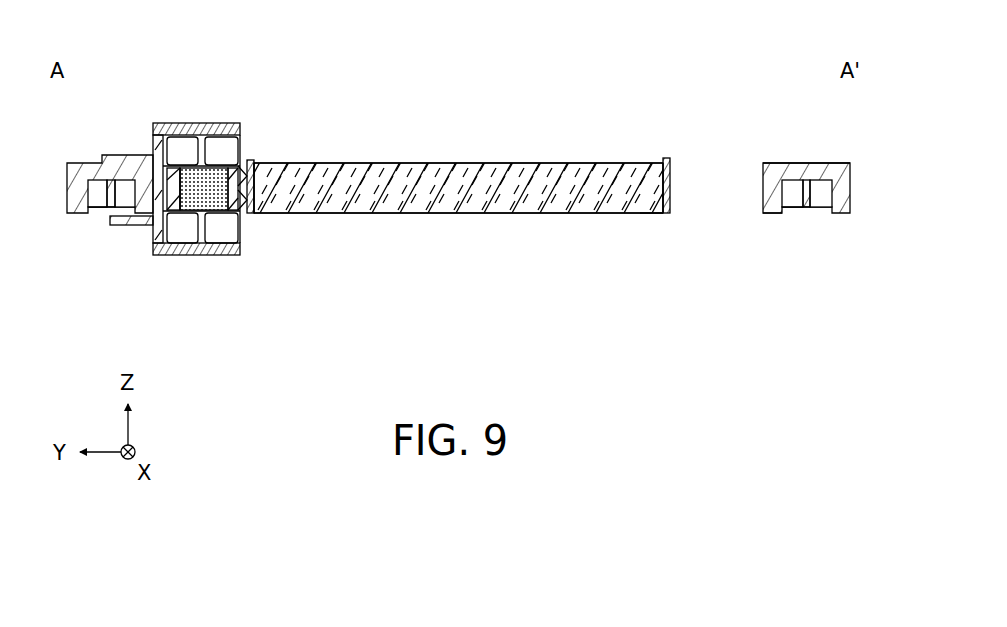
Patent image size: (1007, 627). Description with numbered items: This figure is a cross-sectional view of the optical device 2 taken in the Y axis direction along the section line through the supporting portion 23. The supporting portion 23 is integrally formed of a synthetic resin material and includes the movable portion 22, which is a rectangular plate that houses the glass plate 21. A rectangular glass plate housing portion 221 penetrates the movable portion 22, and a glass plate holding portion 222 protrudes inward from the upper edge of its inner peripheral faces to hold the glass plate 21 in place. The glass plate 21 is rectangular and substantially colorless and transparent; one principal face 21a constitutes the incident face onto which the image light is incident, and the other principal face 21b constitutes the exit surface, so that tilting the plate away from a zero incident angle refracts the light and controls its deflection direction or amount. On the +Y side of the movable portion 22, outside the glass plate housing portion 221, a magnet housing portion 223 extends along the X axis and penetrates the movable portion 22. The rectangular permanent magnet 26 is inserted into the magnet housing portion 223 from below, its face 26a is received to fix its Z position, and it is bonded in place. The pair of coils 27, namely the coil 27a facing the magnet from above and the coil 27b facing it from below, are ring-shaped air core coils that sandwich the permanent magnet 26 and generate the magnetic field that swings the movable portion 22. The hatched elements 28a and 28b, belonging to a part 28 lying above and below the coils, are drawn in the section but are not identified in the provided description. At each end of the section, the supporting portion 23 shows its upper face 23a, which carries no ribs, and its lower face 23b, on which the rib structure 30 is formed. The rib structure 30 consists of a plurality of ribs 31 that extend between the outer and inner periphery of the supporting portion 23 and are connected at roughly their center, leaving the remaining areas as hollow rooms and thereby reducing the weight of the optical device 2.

The optical device 2 is at (803, 42).
The glass plate 21 is at (484, 163).
The principal face 21a is at (380, 163).
The principal face 21b is at (405, 213).
The movable portion 22 is at (668, 163).
The glass plate housing portion 221 is at (650, 193).
The glass plate holding portion 222 is at (278, 170).
The magnet housing portion 223 is at (249, 184).
The supporting portion 23 is at (83, 163).
The +Z axis side face 23a is at (770, 163).
The −Z axis side face 23b is at (772, 214).
The permanent magnet 26 is at (246, 208).
The face of permanent magnet 26a is at (174, 190).
The coils 27 is at (219, 193).
The coil 27a is at (225, 142).
The coil 27b is at (222, 238).
The substrate 28 is at (199, 192).
The upper substrate 28a is at (185, 123).
The lower substrate 28b is at (177, 255).
The rib structure 30 is at (91, 214).
The ribs 31 is at (103, 206).